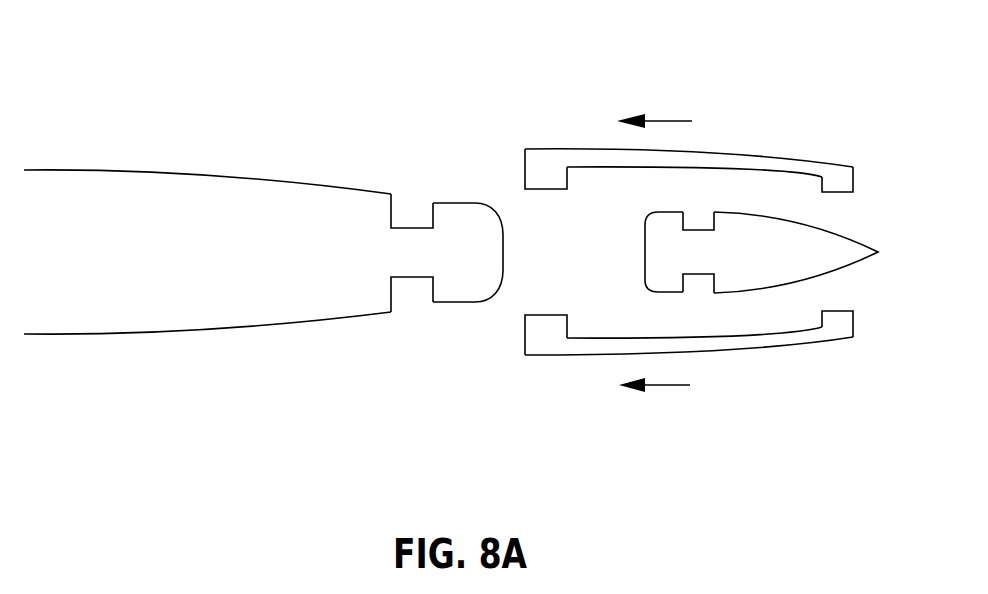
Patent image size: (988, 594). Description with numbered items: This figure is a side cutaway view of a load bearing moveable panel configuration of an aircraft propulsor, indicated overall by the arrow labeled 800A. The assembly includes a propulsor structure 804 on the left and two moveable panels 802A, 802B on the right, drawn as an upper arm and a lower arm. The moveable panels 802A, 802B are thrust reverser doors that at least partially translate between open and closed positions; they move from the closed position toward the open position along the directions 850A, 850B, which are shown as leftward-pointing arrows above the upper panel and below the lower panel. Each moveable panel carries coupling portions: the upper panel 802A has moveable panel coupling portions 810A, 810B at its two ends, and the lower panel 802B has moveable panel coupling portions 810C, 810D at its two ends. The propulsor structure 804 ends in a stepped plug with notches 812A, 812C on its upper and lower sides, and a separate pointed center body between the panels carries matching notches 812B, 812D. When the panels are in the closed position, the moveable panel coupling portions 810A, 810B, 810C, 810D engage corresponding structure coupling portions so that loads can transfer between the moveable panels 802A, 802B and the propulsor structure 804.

The connector assembly 800A is at (160, 83).
The propulsor structure 804 is at (240, 178).
The first notch 812A is at (391, 210).
The second notch 812B is at (715, 223).
The third notch 812C is at (391, 292).
The fourth notch 812D is at (715, 283).
The moveable panel 802A is at (799, 161).
The moveable panel 802B is at (800, 343).
The moveable panel coupling portion 810A is at (525, 168).
The moveable panel coupling portion 810B is at (853, 180).
The moveable panel coupling portion 810C is at (525, 338).
The moveable panel coupling portion 810D is at (853, 322).
The direction 850A is at (660, 109).
The direction 850B is at (661, 397).